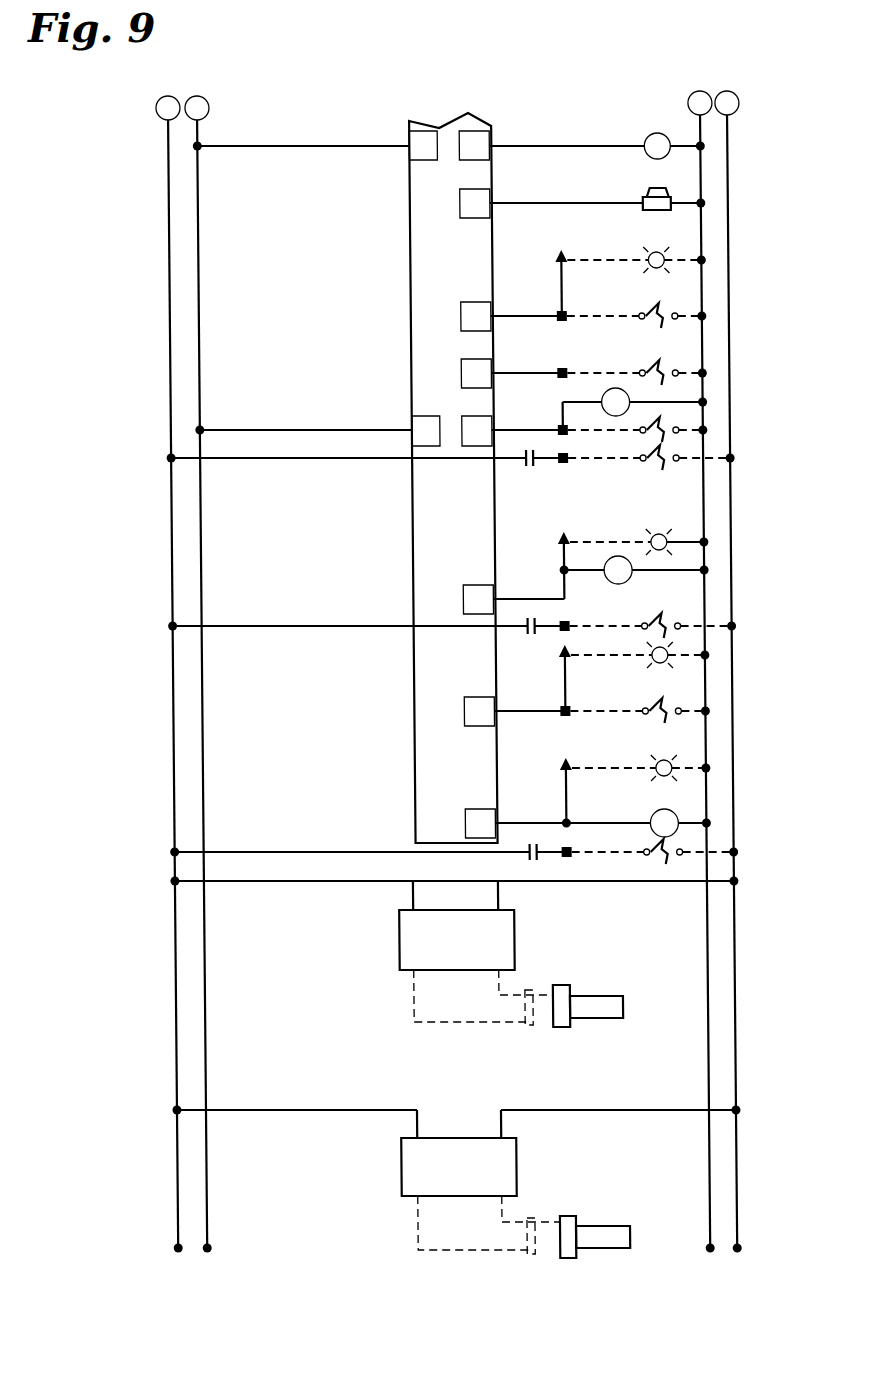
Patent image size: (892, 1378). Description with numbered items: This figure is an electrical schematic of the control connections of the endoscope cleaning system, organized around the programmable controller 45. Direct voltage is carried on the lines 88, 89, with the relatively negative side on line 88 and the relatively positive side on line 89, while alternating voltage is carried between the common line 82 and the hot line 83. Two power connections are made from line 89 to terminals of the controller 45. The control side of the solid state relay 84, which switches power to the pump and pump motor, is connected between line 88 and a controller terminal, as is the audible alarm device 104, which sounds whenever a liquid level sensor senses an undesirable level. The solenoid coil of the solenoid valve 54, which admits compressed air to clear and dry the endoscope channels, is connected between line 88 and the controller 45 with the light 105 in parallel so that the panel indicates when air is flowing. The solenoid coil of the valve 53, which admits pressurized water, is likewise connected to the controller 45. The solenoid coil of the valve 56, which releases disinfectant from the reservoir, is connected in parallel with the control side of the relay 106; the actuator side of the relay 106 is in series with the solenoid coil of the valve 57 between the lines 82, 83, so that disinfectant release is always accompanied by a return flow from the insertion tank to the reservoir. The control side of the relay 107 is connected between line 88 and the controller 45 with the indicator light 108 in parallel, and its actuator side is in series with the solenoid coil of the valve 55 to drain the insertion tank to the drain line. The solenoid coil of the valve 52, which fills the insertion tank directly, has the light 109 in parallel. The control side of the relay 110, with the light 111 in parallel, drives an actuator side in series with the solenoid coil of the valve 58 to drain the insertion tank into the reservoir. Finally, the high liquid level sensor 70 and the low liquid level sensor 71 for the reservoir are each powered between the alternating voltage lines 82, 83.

The programmable controller 45 is at (408, 215).
The valve 52 is at (676, 687).
The valve 53 is at (661, 366).
The solenoid valve 54 is at (660, 310).
The valve 55 is at (655, 614).
The valve 56 is at (657, 420).
The valve 57 is at (652, 466).
The valve 58 is at (652, 846).
The high liquid level sensor 70 is at (391, 943).
The low liquid level sensor 71 is at (391, 1170).
The common line 82 is at (727, 121).
The hot line 83 is at (167, 132).
The solid state relay 84 is at (648, 136).
The line 88 is at (699, 118).
The line 89 is at (197, 128).
The audible alarm device 104 is at (656, 188).
The light 105 is at (650, 250).
The relay 106 is at (608, 392).
The relay 107 is at (613, 584).
The indicator light 108 is at (658, 530).
The light 109 is at (642, 664).
The relay 110 is at (655, 806).
The light 111 is at (659, 756).